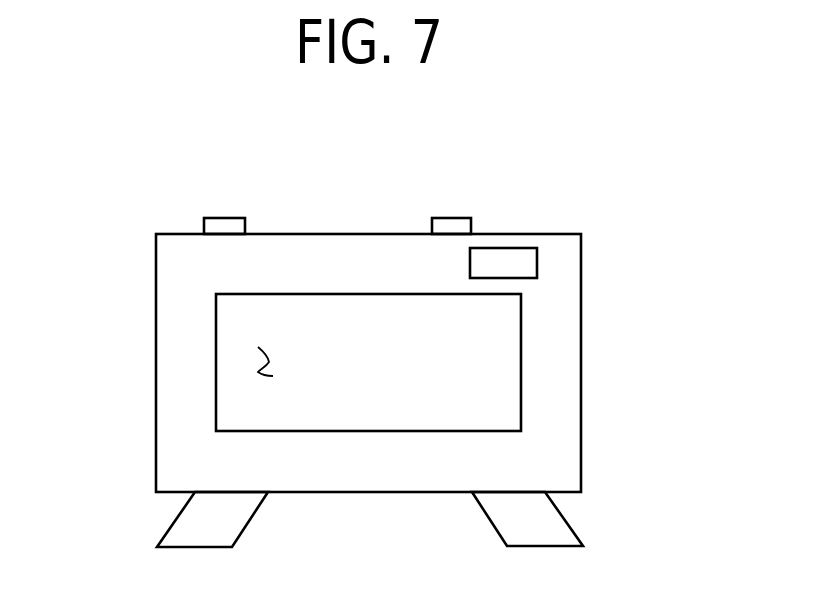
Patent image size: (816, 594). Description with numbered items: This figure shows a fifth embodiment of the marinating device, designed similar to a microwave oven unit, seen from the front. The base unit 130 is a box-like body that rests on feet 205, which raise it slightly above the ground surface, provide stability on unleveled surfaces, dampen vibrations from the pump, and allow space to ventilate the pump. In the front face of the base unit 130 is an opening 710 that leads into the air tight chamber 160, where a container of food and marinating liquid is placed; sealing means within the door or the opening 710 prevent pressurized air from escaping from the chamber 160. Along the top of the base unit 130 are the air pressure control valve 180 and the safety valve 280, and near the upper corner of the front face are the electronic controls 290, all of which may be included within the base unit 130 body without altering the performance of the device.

The base unit 130 is at (581, 275).
The opening 710 is at (275, 294).
The chamber 160 is at (253, 362).
The safety valve 280 is at (232, 216).
The control valve 180 is at (457, 216).
The electronic controls 290 is at (520, 248).
The feet 205 is at (240, 535).